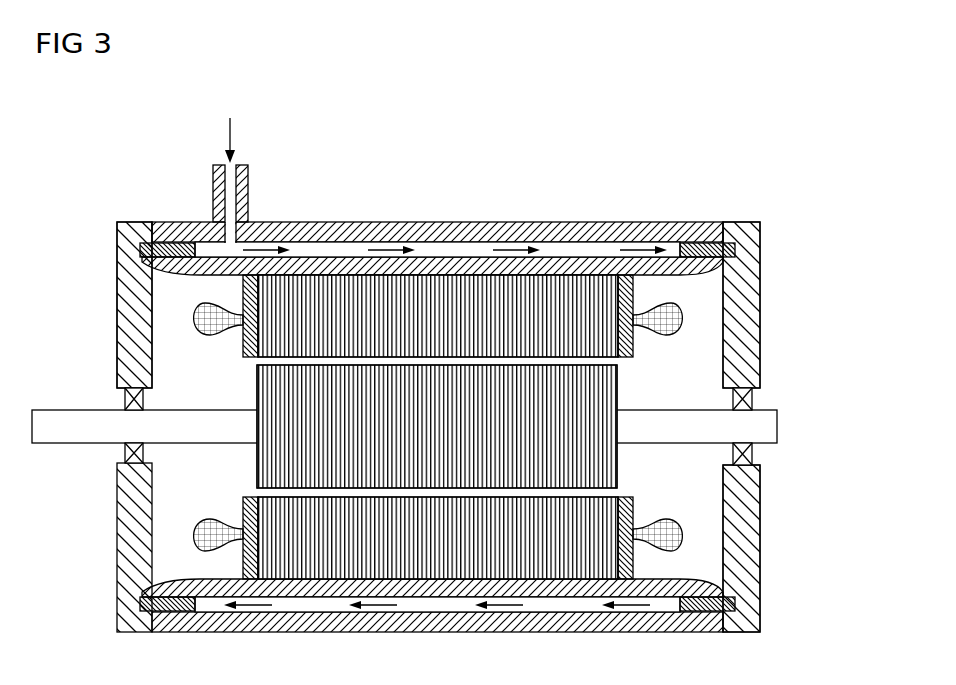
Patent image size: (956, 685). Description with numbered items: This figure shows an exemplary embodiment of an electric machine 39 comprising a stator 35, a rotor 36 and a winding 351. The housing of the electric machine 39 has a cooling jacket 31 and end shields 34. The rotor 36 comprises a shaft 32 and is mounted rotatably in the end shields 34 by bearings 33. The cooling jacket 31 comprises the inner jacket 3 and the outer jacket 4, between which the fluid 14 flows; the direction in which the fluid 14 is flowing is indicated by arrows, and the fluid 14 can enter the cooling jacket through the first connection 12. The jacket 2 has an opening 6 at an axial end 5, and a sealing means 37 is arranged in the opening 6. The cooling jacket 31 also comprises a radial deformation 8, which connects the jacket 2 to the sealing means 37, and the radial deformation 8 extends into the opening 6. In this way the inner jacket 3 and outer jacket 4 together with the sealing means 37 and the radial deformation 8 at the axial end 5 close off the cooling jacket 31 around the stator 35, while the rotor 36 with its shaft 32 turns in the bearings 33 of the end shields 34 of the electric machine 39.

The jacket 2 is at (124, 206).
The inner jacket 3 is at (343, 265).
The outer jacket 4 is at (180, 232).
The axial end 5 is at (719, 201).
The opening 6 is at (750, 253).
The radial deformation 8 is at (712, 277).
The first connection 12 is at (244, 190).
The fluid 14 is at (233, 130).
The cooling jacket 31 is at (486, 196).
The shaft 32 is at (63, 450).
The bearings 33 is at (122, 400).
The end shields 34 is at (120, 296).
The stator 35 is at (306, 558).
The rotor 36 is at (607, 467).
The sealing means 37 is at (694, 247).
The electric machine 39 is at (662, 92).
The winding 351 is at (195, 318).